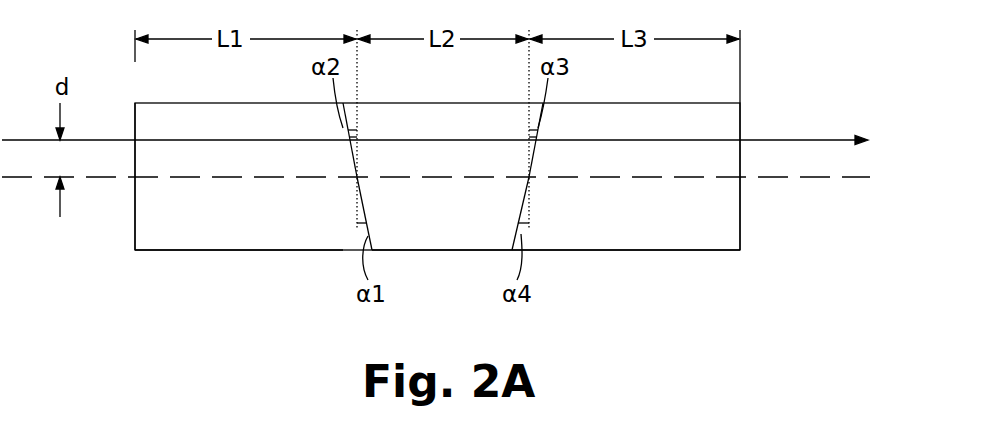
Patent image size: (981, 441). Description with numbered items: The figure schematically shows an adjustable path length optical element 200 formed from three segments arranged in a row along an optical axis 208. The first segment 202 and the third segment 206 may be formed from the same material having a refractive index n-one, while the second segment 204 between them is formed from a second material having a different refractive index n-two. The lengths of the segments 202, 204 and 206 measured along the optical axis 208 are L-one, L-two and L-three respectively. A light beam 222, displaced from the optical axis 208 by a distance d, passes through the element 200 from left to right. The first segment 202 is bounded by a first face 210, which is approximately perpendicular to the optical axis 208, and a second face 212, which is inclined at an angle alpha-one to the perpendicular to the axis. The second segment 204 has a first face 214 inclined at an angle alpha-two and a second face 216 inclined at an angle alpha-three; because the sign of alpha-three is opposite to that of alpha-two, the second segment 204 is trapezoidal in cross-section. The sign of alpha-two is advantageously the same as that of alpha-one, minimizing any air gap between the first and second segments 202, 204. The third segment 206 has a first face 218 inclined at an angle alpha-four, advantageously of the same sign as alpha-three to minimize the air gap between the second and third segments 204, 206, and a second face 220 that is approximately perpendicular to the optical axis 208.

The element 200 is at (772, 66).
The first segment 202 is at (190, 251).
The second segment 204 is at (447, 251).
The third segment 206 is at (609, 251).
The optical axis 208 is at (815, 179).
The first face 210 is at (135, 224).
The second face 212 is at (343, 122).
The first face 214 is at (369, 237).
The second face 216 is at (516, 233).
The first face 218 is at (545, 120).
The second face 220 is at (740, 235).
The light beam 222 is at (800, 139).